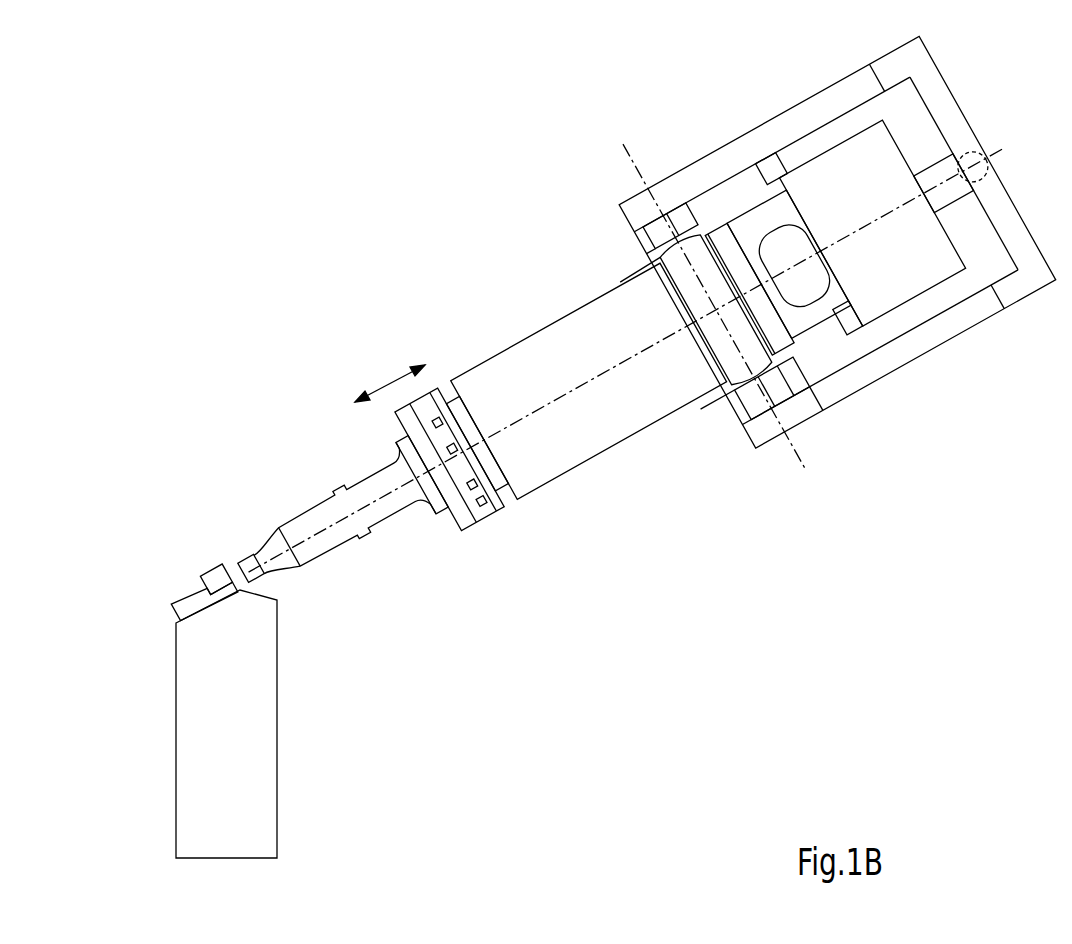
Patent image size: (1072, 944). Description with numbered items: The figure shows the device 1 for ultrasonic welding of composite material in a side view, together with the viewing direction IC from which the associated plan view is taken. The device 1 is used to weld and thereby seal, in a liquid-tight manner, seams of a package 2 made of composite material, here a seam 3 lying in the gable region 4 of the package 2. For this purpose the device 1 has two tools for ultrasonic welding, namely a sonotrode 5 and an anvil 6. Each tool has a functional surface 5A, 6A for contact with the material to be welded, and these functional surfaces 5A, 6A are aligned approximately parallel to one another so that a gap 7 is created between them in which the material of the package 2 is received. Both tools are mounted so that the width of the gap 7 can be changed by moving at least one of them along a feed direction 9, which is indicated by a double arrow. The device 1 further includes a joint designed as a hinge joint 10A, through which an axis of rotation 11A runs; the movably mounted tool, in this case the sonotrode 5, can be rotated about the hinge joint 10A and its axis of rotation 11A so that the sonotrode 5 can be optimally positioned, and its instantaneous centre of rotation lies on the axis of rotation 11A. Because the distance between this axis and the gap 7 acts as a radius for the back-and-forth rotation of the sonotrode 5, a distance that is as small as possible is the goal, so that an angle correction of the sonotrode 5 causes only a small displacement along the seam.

The device 1 is at (626, 361).
The package 2 is at (198, 739).
The seam 3 is at (237, 583).
The gable region 4 is at (242, 602).
The sonotrode 5 is at (333, 538).
The functional surface 5A is at (236, 566).
The anvil 6 is at (195, 578).
The functional surface 6A is at (210, 572).
The gap 7 is at (224, 556).
The feed direction 9 is at (388, 383).
The hinge joint 10A is at (658, 235).
The axis of rotation 11A is at (800, 465).
The viewing direction IC is at (425, 182).